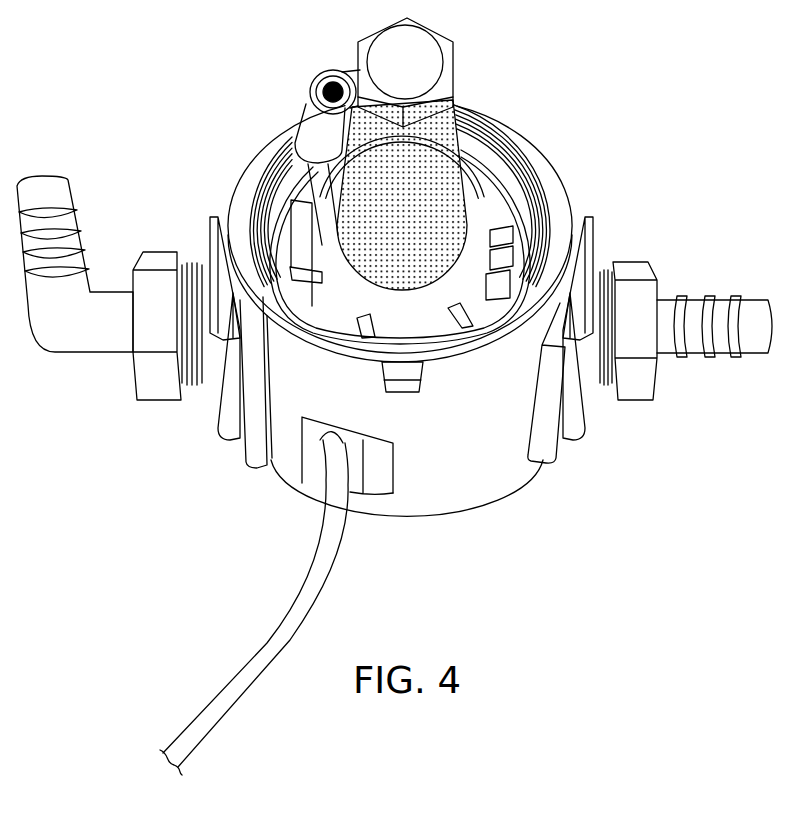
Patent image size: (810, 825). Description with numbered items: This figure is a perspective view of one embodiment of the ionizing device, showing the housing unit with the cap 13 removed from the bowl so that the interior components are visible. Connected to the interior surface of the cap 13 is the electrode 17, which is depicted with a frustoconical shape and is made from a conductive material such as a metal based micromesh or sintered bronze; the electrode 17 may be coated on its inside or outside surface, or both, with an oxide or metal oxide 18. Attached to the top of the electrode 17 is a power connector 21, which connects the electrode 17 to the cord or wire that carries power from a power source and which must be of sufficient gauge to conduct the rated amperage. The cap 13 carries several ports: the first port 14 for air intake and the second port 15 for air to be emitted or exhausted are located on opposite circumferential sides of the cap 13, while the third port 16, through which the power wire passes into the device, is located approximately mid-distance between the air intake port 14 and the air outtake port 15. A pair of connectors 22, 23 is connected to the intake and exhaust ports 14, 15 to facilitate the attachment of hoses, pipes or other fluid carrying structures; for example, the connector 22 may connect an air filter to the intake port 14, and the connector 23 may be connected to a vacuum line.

The cap 13 is at (363, 494).
The first port 14 is at (200, 262).
The second port 15 is at (603, 270).
The third port 16 is at (340, 432).
The electrode 17 is at (458, 108).
The metal oxide 18 is at (440, 168).
The power connector 21 is at (300, 117).
The connector 22 is at (80, 353).
The connector 23 is at (747, 293).